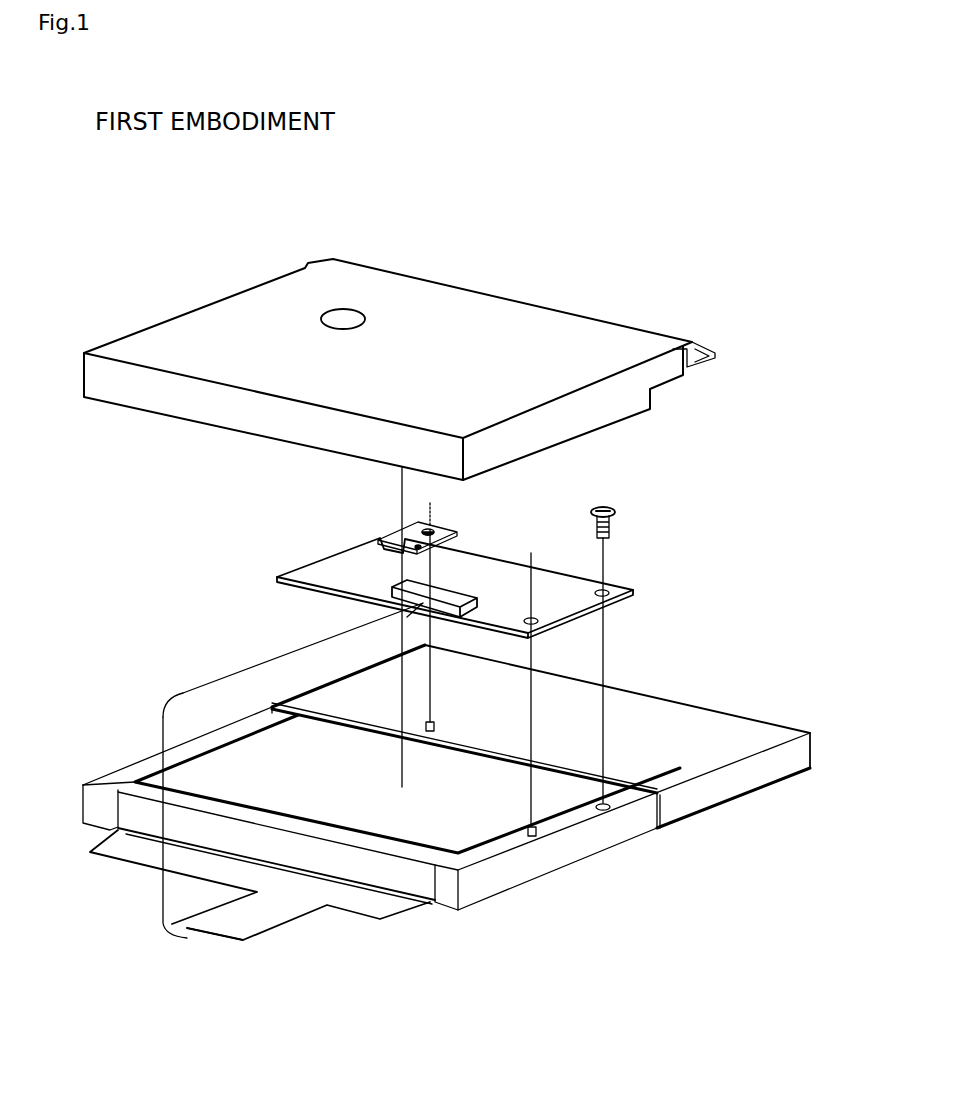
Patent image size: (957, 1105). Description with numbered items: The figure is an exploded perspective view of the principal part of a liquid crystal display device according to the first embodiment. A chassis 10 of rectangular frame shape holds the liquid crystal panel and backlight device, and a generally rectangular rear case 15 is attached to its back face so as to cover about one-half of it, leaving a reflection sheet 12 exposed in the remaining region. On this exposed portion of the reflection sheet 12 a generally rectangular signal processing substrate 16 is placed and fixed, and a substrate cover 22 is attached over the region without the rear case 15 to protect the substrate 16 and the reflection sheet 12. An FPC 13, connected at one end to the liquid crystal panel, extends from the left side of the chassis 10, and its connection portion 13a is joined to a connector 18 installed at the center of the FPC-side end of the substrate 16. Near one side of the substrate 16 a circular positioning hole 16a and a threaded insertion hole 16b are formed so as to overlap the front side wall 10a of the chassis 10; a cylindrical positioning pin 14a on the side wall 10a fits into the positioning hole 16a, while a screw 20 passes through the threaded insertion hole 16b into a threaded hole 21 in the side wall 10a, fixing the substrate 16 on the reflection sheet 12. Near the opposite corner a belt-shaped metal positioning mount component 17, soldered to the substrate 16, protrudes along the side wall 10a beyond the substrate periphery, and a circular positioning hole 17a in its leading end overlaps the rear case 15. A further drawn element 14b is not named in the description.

The chassis 10 is at (532, 887).
The side wall 10a is at (148, 758).
The reflection sheet 12 is at (265, 760).
The FPC 13 is at (398, 915).
The connection portion 13a is at (225, 940).
The positioning pin 14a is at (543, 823).
The connector 14b is at (437, 726).
The rear case 15 is at (735, 727).
The signal processing substrate 16 is at (272, 577).
The positioning hole 16a is at (532, 618).
The threaded insertion hole 16b is at (608, 592).
The positioning mount component 17 is at (418, 524).
The positioning hole 17a is at (433, 528).
The connector 18 is at (455, 583).
The screw 20 is at (619, 512).
The threaded hole 21 is at (612, 797).
The substrate cover 22 is at (547, 300).